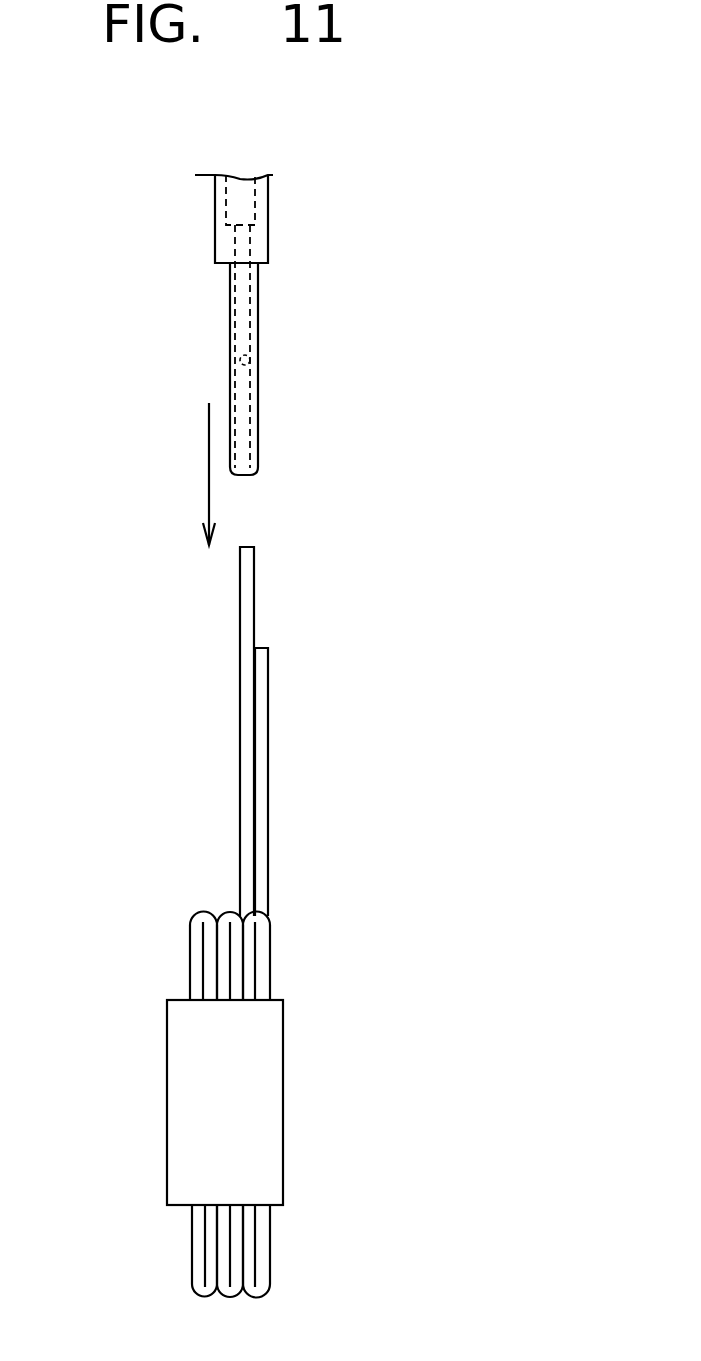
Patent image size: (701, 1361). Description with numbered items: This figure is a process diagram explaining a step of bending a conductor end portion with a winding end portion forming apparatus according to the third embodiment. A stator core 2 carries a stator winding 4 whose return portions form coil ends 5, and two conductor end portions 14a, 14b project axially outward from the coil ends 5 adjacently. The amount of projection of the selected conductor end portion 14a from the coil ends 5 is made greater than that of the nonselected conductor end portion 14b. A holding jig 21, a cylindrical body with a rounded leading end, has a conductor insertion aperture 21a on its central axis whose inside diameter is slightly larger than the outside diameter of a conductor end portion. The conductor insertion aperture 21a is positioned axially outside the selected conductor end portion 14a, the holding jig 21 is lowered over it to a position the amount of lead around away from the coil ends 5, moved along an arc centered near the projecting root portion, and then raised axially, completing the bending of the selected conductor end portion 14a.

The stator core 2 is at (175, 1093).
The stator winding 4 is at (233, 956).
The coil ends 5 is at (260, 954).
The selected conductor end portion 14a is at (247, 673).
The nonselected conductor end portion 14b is at (263, 735).
The holding jig 21 is at (268, 295).
The conductor insertion aperture 21a is at (255, 355).